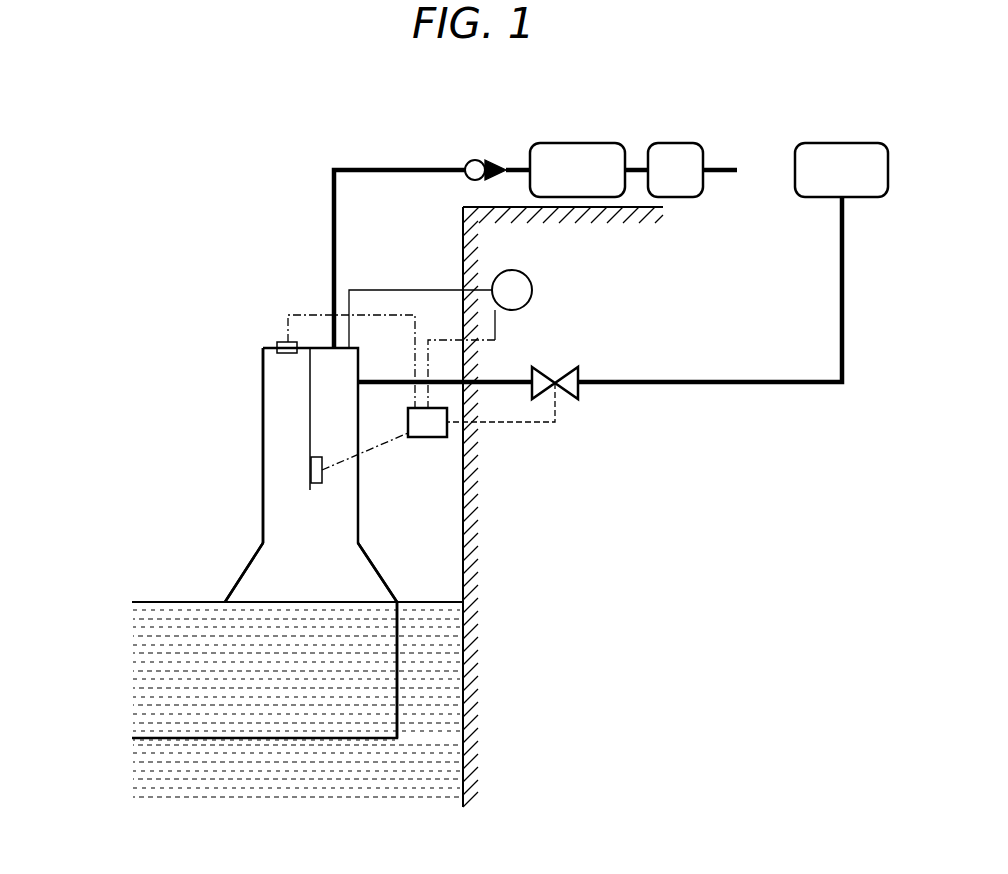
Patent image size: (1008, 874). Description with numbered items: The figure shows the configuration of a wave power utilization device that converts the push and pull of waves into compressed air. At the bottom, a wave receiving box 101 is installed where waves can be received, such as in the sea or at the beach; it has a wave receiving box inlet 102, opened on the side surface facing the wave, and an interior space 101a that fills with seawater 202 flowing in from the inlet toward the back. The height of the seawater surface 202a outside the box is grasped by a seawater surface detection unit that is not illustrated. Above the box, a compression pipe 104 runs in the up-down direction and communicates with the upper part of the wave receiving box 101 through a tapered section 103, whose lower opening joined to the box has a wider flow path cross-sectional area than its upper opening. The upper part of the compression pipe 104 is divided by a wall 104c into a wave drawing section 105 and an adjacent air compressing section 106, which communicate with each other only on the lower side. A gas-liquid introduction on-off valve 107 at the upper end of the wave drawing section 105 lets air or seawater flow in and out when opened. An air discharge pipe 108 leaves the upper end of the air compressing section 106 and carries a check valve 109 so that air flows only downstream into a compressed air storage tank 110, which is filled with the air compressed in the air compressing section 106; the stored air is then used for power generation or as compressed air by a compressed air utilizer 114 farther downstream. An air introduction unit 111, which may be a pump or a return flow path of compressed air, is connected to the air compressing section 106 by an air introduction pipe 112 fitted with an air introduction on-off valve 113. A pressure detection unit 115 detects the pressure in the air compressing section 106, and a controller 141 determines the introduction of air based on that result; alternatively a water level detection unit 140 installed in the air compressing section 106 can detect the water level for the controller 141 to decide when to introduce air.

The wave receiving box 101 is at (357, 742).
The space 101a is at (370, 678).
The wave receiving box inlet 102 is at (220, 683).
The tapered section 103 is at (272, 580).
The compression pipe 104 is at (369, 469).
The wall 104c is at (310, 410).
The wave drawing section 105 is at (283, 445).
The air compressing section 106 is at (343, 428).
The gas-liquid introduction on-off valve 107 is at (287, 340).
The air discharge pipe 108 is at (357, 170).
The check valve 109 is at (475, 160).
The compressed air storage tank 110 is at (578, 143).
The air introduction unit 111 is at (840, 143).
The air introduction pipe 112 is at (770, 385).
The air introduction on-off valve 113 is at (578, 396).
The compressed air utilizer 114 is at (682, 143).
The pressure detection unit 115 is at (532, 290).
The water level detection unit 140 is at (310, 467).
The controller 141 is at (450, 432).
The seawater 202 is at (157, 676).
The seawater surface 202a is at (158, 602).